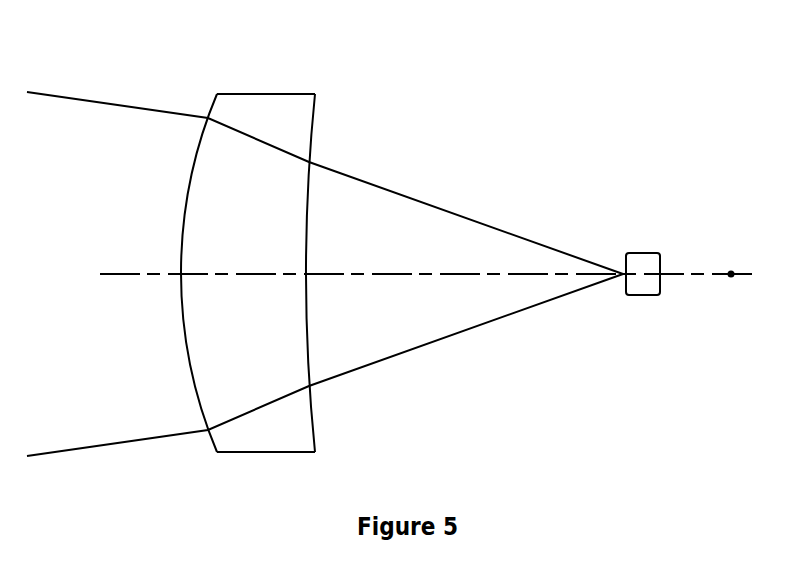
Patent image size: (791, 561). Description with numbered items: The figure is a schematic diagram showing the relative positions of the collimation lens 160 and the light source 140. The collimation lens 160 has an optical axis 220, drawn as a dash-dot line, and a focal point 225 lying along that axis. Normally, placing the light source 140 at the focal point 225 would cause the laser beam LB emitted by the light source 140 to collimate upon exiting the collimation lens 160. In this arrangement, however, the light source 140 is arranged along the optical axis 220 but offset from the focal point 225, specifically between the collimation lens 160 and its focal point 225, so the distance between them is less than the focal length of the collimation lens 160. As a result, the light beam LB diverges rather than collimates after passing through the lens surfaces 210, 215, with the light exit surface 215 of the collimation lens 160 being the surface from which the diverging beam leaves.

The laser beam LB is at (84, 96).
The collimation lens 160 is at (261, 245).
The second (rear) lens surface 210 is at (311, 152).
The light exit surface 215 is at (181, 251).
The optical axis 220 is at (125, 275).
The light source 140 is at (641, 252).
The focal point 225 is at (732, 278).